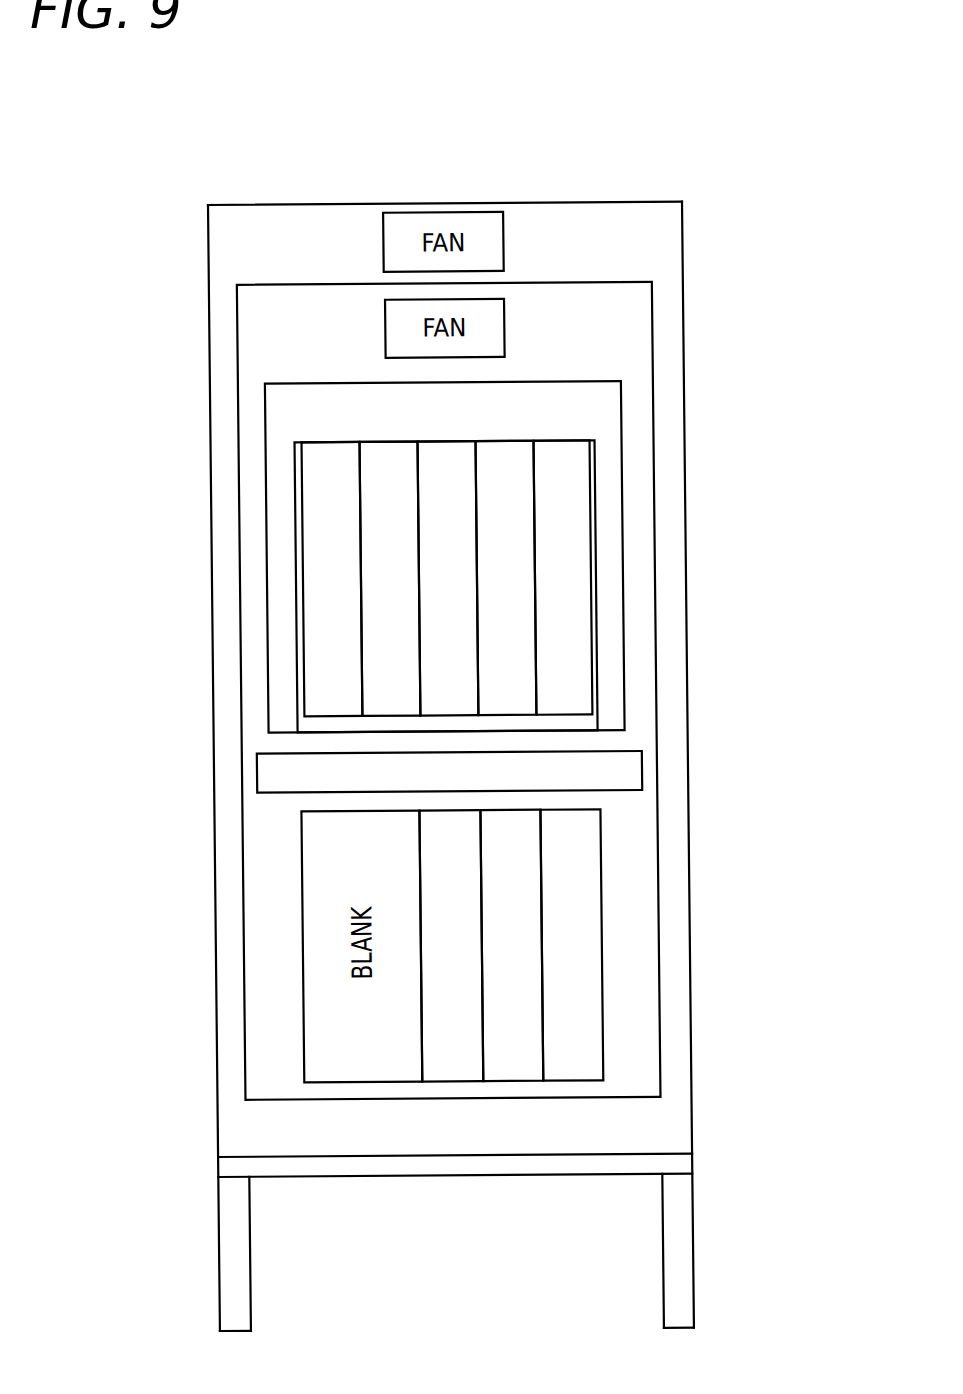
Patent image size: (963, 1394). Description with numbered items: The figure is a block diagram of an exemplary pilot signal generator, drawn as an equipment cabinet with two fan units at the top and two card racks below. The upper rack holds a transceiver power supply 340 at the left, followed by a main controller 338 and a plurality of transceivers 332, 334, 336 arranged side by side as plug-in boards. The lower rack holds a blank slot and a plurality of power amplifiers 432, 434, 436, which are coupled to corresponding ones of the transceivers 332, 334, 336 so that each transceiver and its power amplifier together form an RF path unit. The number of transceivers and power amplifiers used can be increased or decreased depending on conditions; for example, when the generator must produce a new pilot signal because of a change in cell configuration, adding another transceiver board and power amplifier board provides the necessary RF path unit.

The transceiver 332 is at (563, 478).
The transceiver 334 is at (502, 464).
The transceiver 336 is at (443, 442).
The main controller 338 is at (392, 442).
The transceiver power supply 340 is at (328, 442).
The power amplifier 432 is at (568, 828).
The power amplifier 434 is at (508, 826).
The power amplifier 436 is at (450, 812).